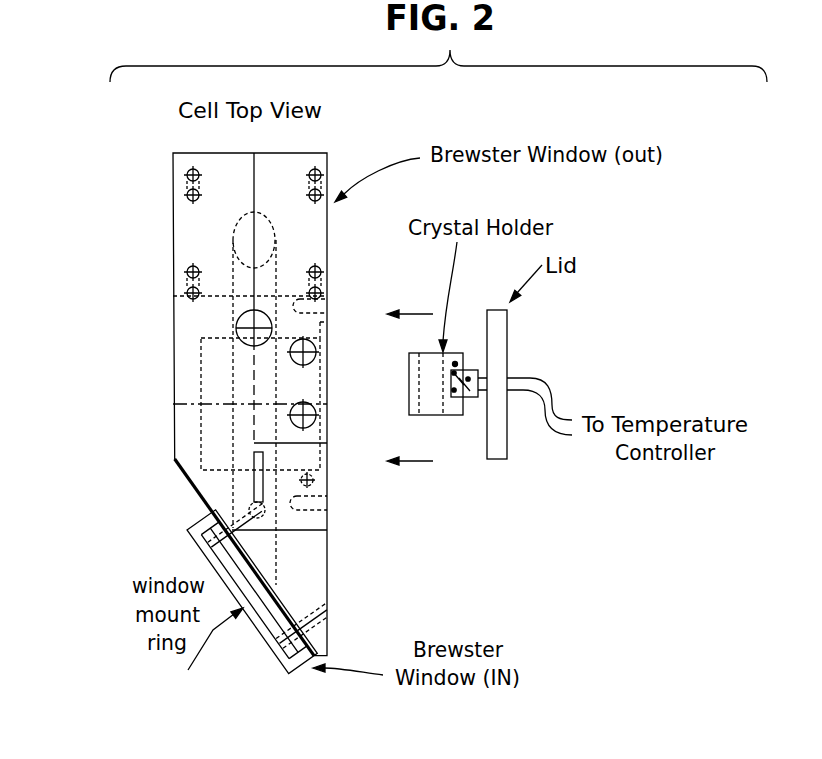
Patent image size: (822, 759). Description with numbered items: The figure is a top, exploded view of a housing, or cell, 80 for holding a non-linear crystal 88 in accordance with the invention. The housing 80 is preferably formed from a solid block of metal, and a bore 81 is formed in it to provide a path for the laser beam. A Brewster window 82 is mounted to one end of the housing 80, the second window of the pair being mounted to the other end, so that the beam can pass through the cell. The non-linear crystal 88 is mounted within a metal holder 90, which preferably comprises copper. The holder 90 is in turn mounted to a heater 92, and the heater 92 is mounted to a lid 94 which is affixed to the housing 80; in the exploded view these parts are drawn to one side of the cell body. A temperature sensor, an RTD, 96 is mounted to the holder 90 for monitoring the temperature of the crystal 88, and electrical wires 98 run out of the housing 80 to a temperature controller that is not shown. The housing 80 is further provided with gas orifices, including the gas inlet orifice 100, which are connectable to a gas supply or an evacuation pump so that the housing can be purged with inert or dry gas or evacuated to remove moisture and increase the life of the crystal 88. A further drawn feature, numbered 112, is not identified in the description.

The housing (cell) 80 is at (140, 421).
The bore 81 is at (242, 240).
The Brewster window 82 is at (293, 671).
The non-linear crystal 88 is at (429, 403).
The holder 90 is at (677, 319).
The heater 92 is at (476, 423).
The lid 94 is at (508, 462).
The temperature sensor (RTD) 96 is at (460, 342).
The electrical wires 98 is at (547, 393).
The gas inlet orifice 100 is at (319, 415).
The hole 112 is at (319, 352).